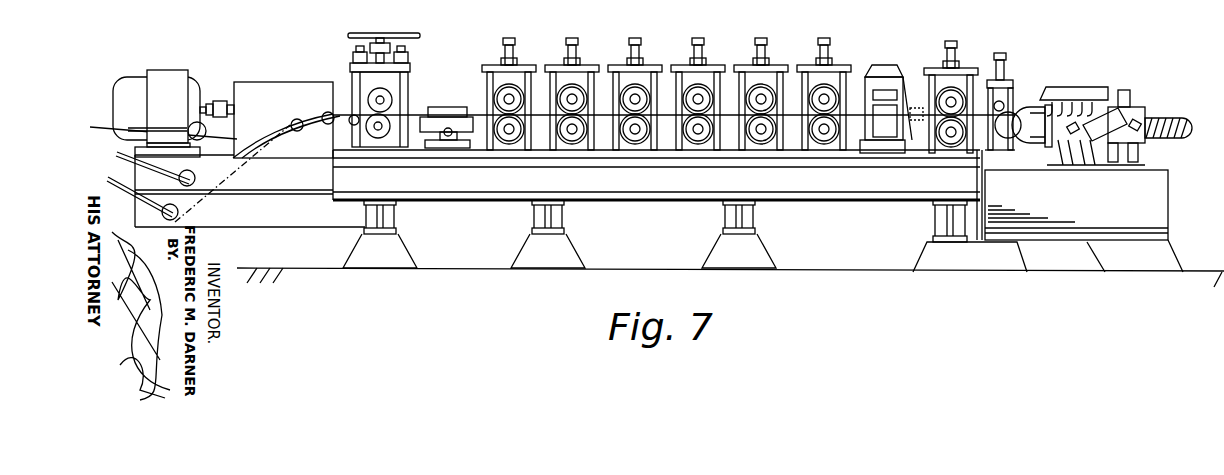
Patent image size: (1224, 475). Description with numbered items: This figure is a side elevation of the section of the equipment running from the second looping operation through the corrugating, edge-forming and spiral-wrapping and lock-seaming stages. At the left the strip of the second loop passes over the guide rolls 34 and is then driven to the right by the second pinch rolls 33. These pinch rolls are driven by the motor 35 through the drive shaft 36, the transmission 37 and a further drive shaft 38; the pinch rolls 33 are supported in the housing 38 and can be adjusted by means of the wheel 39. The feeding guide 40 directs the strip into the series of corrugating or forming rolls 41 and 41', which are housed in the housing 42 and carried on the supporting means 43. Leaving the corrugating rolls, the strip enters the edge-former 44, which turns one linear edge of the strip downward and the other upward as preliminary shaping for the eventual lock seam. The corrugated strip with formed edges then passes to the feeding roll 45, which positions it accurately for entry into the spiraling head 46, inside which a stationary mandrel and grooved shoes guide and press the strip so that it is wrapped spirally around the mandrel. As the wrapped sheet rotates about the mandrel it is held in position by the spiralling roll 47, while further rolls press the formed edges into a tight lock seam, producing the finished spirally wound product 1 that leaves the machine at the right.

The formed strip product 1 is at (1186, 140).
The second pinch rolls 33 is at (387, 125).
The guide rolls 34 is at (345, 120).
The motor 35 is at (173, 70).
The drive shaft 36 is at (224, 101).
The transmission 37 is at (287, 85).
The housing 38 is at (409, 72).
The wheel 39 is at (413, 34).
The feeding guide 40 is at (449, 107).
The corrugating or forming rolls 41 is at (649, 70).
The corrugating or forming rolls 41' is at (666, 153).
The housing 42 is at (491, 67).
The supporting means 43 is at (802, 158).
The edge-former 44 is at (863, 70).
The feeding roll 45 is at (935, 98).
The spiraling head 46 is at (1060, 137).
The spiralling roll 47 is at (1103, 135).